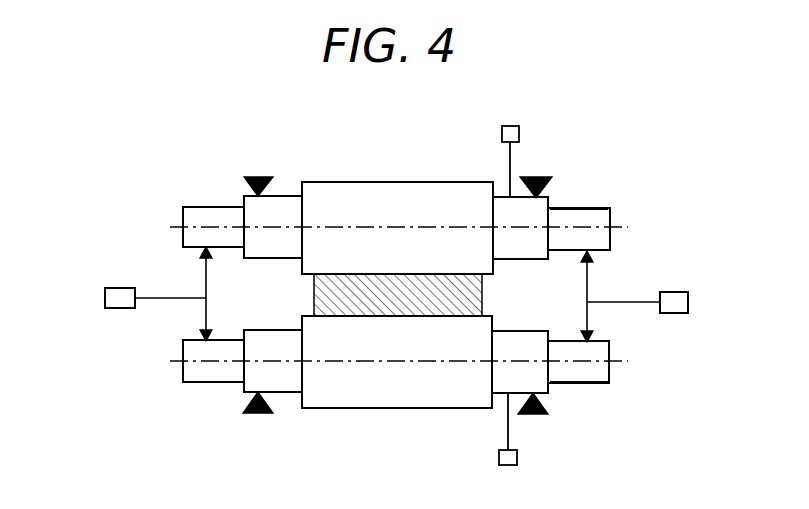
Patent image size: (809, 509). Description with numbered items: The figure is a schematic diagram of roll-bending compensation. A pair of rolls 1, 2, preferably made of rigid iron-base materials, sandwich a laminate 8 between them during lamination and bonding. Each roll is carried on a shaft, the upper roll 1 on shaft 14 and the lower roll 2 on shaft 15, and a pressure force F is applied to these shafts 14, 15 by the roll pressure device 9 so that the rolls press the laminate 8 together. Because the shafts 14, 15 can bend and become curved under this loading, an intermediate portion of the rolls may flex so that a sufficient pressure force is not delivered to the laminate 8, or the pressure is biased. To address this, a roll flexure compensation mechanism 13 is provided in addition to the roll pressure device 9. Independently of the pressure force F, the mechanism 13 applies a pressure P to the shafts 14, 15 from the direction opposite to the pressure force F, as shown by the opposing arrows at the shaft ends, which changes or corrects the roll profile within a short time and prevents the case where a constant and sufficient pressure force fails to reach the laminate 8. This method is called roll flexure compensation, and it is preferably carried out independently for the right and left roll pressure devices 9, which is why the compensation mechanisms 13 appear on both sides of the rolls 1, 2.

The roll 1 is at (428, 182).
The roll 2 is at (410, 408).
The laminate 8 is at (483, 294).
The roll pressure device 9 is at (519, 131).
The roll flexure compensation mechanism 13 is at (105, 293).
The shaft 14 is at (578, 208).
The shaft 15 is at (580, 383).
The pressure force F is at (262, 173).
The pressure P is at (207, 285).